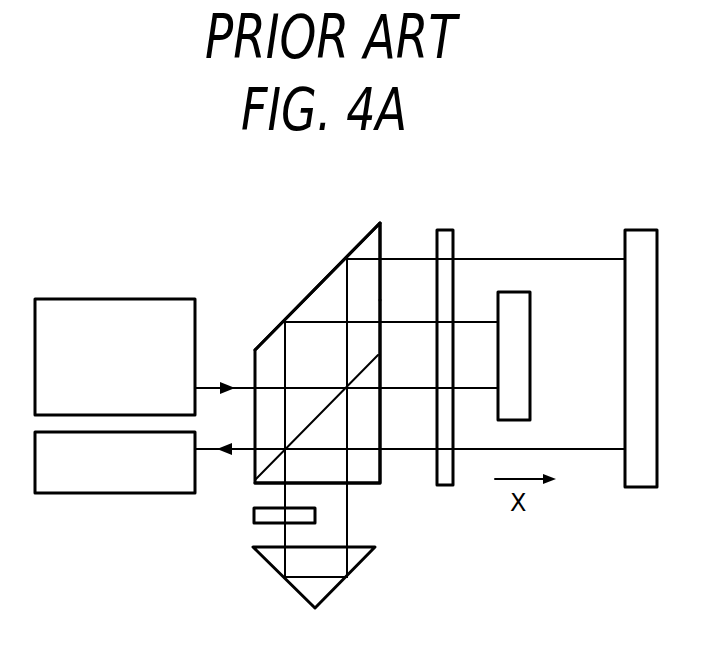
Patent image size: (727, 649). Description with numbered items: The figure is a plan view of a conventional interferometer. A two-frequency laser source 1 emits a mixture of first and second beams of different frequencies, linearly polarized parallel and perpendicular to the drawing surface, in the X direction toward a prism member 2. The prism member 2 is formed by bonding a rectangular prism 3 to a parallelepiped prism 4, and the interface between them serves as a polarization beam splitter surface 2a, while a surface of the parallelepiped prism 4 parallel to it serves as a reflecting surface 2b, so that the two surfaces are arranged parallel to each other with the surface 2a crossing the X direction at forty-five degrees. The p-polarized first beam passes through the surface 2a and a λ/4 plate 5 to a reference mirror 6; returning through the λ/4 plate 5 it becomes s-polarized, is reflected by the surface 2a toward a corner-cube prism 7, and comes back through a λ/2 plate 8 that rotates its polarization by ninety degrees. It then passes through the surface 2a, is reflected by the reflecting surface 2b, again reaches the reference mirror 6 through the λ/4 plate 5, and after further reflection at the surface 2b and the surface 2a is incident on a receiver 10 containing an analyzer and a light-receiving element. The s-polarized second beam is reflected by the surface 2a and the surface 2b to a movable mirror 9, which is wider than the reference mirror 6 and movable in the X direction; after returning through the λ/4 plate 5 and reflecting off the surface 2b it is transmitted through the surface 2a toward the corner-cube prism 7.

The two-frequency laser source 1 is at (116, 299).
The prism member 2 is at (265, 322).
The polarization beam splitter surface 2a is at (264, 466).
The reflecting surface 2b is at (320, 283).
The rectangular prism 3 is at (380, 470).
The parallelepiped prism 4 is at (370, 249).
The λ/4 plate 5 is at (441, 230).
The reference mirror 6 is at (530, 338).
The corner-cube prism 7 is at (340, 585).
The λ/2 plate 8 is at (253, 514).
The movable mirror 9 is at (638, 230).
The receiver 10 is at (104, 493).